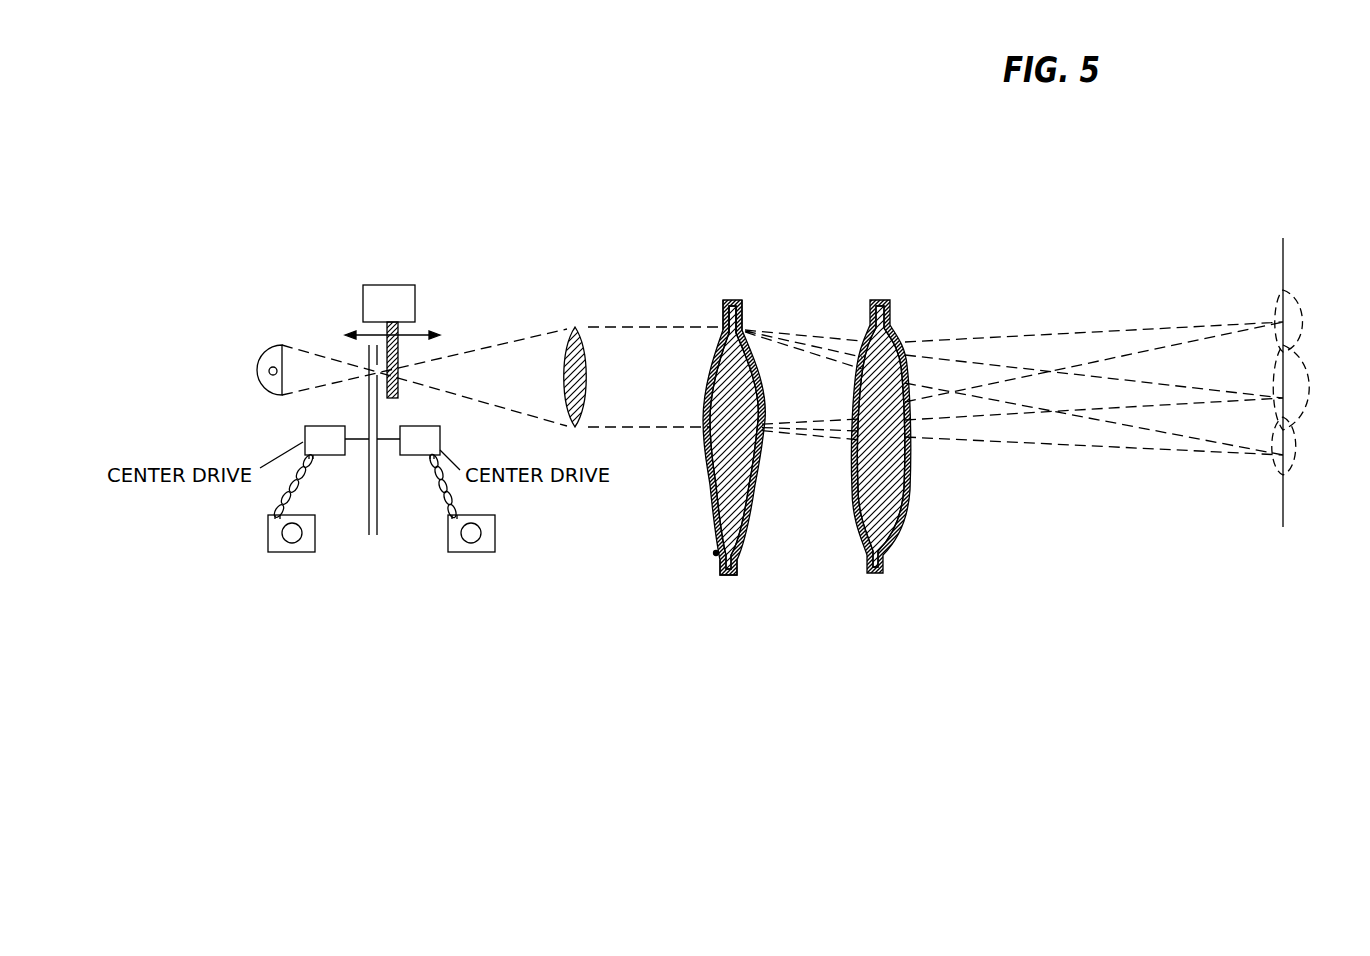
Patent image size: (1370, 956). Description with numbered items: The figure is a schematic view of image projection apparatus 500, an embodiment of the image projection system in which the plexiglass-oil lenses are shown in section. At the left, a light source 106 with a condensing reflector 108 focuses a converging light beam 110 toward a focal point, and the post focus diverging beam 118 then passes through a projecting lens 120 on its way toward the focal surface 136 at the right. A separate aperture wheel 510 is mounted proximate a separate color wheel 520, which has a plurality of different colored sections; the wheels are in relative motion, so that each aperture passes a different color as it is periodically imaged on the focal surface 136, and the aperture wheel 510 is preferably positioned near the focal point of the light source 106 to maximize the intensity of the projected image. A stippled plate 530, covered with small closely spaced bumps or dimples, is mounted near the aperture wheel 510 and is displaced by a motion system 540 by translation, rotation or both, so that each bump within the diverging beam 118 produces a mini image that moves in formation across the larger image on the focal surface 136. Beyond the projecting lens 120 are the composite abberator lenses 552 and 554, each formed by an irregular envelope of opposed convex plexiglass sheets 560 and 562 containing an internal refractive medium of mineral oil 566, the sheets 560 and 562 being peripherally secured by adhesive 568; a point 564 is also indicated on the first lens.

The light source 106 is at (271, 367).
The condensing reflector 108 is at (250, 365).
The converging light beam 110 is at (313, 350).
The post focus diverging beam 118 is at (473, 398).
The projecting lens 120 is at (582, 347).
The focal surface 136 is at (1300, 318).
The image projection apparatus 500 is at (907, 227).
The aperture wheel 510 is at (378, 523).
The color wheel 520 is at (365, 515).
The stippled plate 530 is at (398, 330).
The motion system 540 is at (373, 283).
The composite abberator lens 552 is at (727, 422).
The composite abberator lens 554 is at (910, 490).
The convex plexiglass sheet 560 is at (720, 318).
The convex plexiglass sheet 562 is at (742, 318).
The lens edge point 564 is at (715, 553).
The mineral oil 566 is at (735, 512).
The adhesive 568 is at (730, 577).